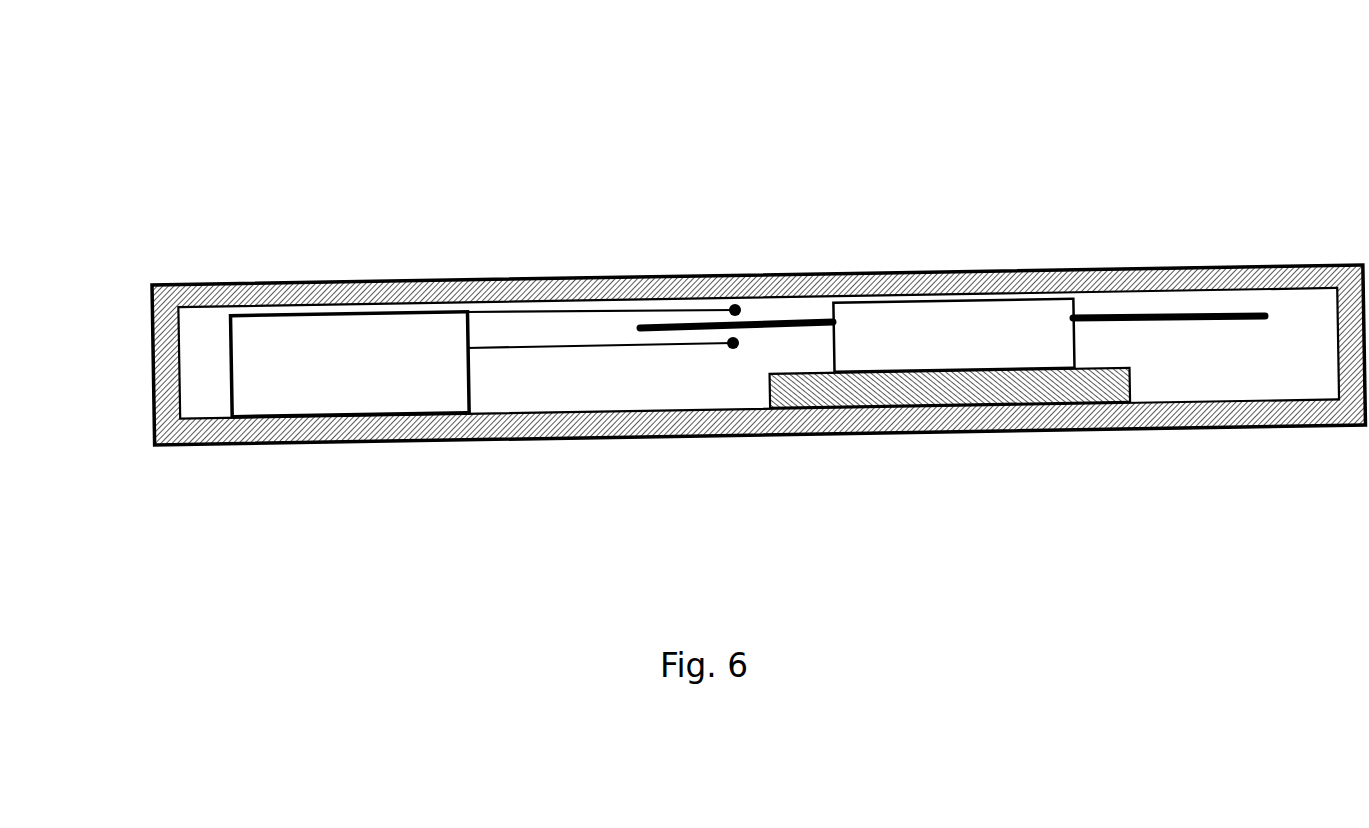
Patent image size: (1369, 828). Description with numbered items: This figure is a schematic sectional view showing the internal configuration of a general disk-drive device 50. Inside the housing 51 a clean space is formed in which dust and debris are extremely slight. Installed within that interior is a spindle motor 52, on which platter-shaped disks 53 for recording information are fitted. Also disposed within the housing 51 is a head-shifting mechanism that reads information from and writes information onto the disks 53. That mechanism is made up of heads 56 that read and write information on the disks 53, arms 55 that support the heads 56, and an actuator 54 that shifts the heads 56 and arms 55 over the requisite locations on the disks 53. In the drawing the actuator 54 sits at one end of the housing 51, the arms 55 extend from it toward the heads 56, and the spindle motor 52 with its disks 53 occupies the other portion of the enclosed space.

The disk-drive device 50 is at (671, 108).
The housing 51 is at (1054, 270).
The spindle motor 52 is at (942, 343).
The disks 53 is at (1172, 310).
The actuator 54 is at (313, 342).
The arms 55 is at (548, 345).
The heads 56 is at (738, 343).